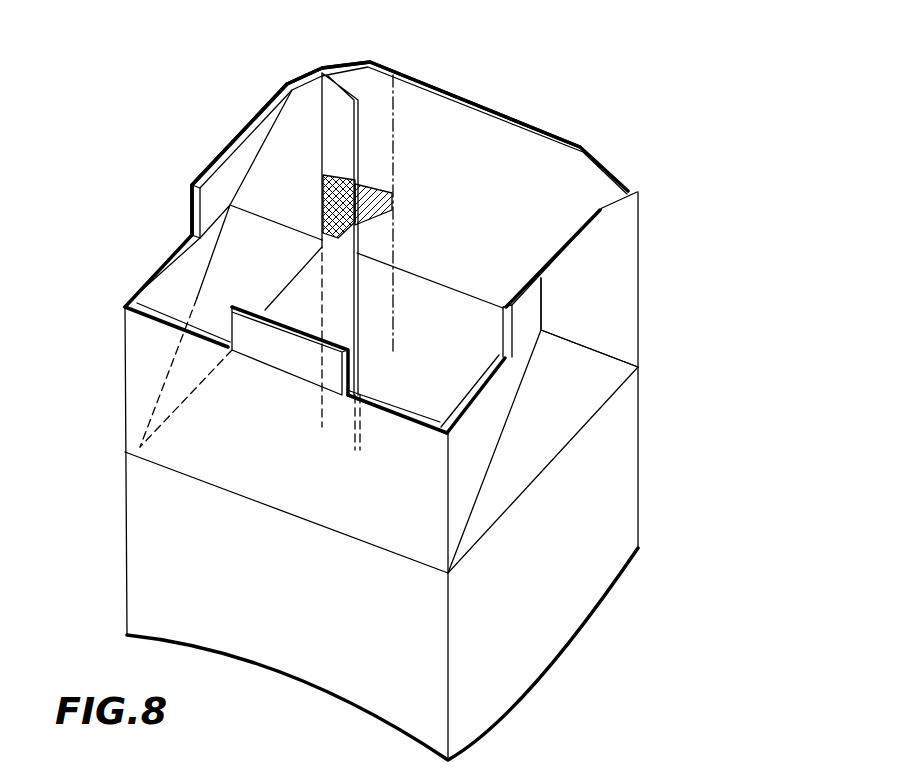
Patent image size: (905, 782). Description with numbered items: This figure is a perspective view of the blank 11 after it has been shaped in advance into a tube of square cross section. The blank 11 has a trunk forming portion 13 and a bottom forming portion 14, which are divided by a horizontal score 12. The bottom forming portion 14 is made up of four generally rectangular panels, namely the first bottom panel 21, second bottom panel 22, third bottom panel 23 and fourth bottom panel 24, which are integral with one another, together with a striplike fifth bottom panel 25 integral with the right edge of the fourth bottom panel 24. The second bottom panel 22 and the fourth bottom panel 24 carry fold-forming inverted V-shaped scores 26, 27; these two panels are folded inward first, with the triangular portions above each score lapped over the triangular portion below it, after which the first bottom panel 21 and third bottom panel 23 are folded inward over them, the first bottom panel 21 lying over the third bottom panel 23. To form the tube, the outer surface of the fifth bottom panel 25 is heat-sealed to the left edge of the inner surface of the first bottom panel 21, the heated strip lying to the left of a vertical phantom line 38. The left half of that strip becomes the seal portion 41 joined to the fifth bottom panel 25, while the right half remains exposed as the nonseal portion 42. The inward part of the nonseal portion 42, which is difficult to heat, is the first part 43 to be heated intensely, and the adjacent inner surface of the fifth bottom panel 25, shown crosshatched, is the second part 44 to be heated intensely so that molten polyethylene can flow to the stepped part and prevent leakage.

The blank 11 is at (646, 598).
The horizontal score 12 is at (295, 513).
The trunk forming portion 13 is at (641, 510).
The bottom forming portion 14 is at (617, 131).
The first bottom panel 21 is at (548, 130).
The second bottom panel 22 is at (625, 280).
The third bottom panel 23 is at (148, 367).
The fourth bottom panel 24 is at (192, 183).
The fifth bottom panel 25 is at (332, 72).
The inverted V-shaped score 26 is at (582, 345).
The inverted V-shaped score 27 is at (193, 300).
The vertical phantom line 38 is at (393, 131).
The seal portion 41 is at (330, 133).
The nonseal portion 42 is at (378, 95).
The first part to be heated intensely 43 is at (378, 208).
The second part to be heated intensely 44 is at (322, 207).